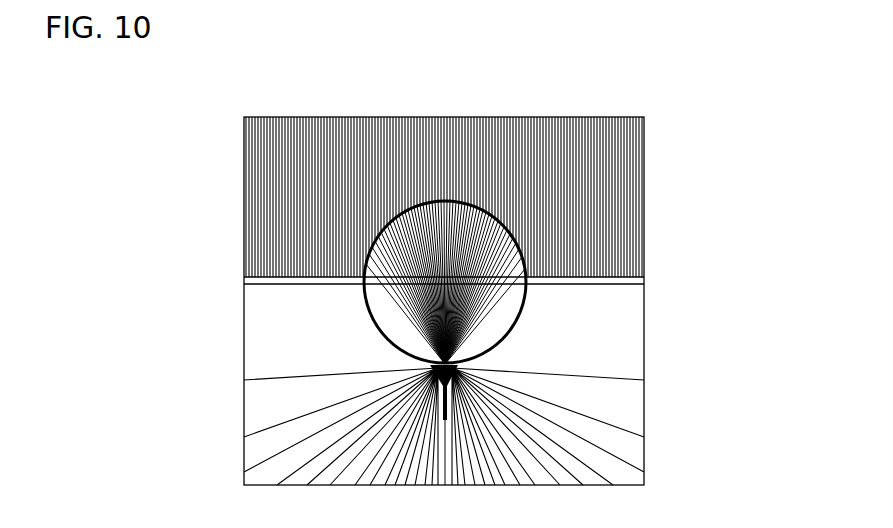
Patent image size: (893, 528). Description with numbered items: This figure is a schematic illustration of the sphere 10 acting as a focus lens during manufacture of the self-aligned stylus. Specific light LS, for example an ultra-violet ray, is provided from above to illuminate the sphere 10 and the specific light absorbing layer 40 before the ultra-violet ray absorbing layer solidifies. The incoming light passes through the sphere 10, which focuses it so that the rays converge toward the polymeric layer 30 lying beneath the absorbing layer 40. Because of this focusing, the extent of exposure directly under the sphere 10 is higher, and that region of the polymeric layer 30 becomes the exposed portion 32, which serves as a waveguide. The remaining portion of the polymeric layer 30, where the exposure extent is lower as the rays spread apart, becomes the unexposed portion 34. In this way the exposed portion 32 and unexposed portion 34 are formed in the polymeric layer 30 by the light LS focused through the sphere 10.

The sphere 10 is at (518, 318).
The polymeric layer 30 is at (244, 328).
The exposed portion 32 is at (505, 381).
The unexposed portion 34 is at (255, 404).
The specific light absorbing layer 40 is at (244, 278).
The specific light LS is at (630, 207).